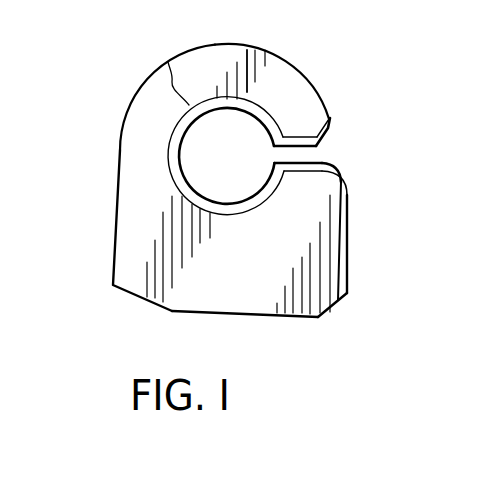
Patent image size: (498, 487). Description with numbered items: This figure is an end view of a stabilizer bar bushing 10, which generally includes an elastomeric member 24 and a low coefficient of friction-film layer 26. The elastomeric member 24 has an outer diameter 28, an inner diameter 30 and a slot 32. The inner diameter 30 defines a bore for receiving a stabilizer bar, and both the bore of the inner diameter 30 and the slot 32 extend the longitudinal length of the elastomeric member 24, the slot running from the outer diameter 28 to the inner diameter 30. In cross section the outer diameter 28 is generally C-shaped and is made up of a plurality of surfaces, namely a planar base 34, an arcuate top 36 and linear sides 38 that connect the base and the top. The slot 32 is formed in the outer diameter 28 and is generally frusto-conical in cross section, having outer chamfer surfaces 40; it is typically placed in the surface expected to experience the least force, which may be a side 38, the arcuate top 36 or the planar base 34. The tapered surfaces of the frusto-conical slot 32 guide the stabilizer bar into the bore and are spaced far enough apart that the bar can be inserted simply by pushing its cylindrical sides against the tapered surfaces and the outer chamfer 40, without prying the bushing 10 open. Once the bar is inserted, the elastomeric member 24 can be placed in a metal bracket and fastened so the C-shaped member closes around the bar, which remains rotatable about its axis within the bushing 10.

The stabilizer bar bushing 10 is at (318, 63).
The elastomeric member 24 is at (333, 267).
The low coefficient of friction-film layer 26 is at (324, 163).
The outer diameter 28 is at (270, 52).
The inner diameter 30 is at (168, 62).
The slot 32 is at (323, 143).
The planar base 34 is at (238, 316).
The arcuate top 36 is at (215, 44).
The linear sides 38 is at (117, 184).
The outer chamfer surfaces 40 is at (345, 177).